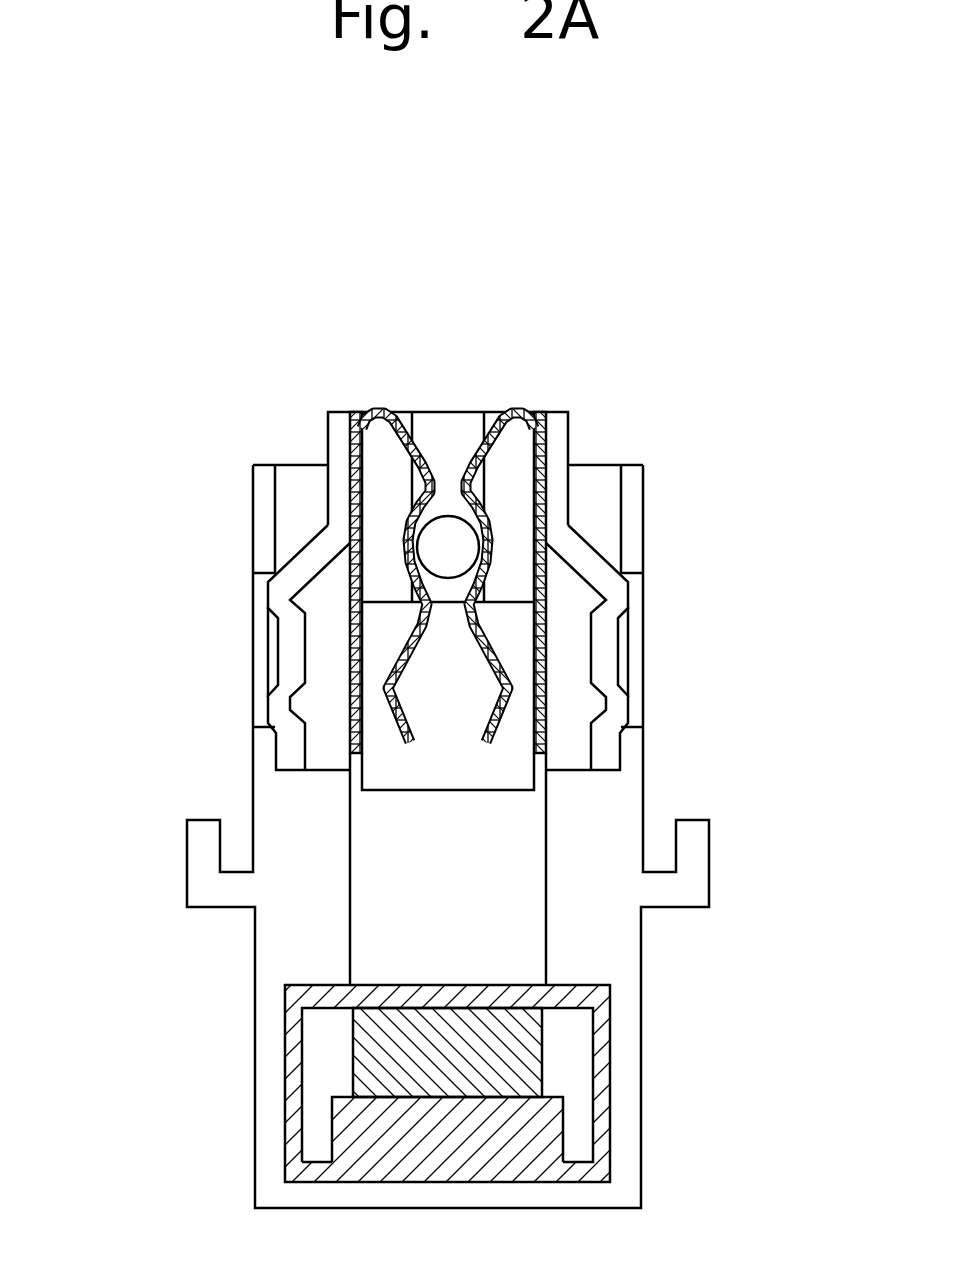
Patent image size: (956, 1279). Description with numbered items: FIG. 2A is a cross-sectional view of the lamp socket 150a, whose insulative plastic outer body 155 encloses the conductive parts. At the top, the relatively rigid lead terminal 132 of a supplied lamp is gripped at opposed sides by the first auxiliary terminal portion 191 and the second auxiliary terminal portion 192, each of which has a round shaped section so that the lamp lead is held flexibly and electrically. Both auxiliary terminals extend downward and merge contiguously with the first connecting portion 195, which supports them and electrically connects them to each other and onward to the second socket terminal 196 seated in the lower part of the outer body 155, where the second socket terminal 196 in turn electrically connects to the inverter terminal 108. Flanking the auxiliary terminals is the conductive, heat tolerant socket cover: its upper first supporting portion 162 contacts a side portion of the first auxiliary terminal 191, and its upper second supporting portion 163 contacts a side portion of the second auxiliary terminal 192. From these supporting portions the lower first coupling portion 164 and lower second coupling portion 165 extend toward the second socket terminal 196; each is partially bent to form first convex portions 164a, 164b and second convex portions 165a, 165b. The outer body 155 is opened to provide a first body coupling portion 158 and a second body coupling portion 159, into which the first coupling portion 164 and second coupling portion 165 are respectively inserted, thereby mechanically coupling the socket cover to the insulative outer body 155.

The socket assembly 150a is at (672, 305).
The outer body 155 is at (620, 801).
The first body coupling portion 158 is at (300, 480).
The second body coupling portion 159 is at (598, 478).
The first supporting portion 162 is at (340, 425).
The second supporting portion 163 is at (558, 425).
The lead terminal 132 is at (449, 528).
The first auxiliary terminal portion 191 is at (410, 540).
The second auxiliary terminal portion 192 is at (488, 543).
The first coupling portion 164 is at (194, 647).
The first convex portion 164a is at (282, 600).
The first convex portion 164b is at (282, 708).
The second coupling portion 165 is at (701, 647).
The second convex portion 165a is at (614, 600).
The second convex portion 165b is at (658, 710).
The first connecting portion 195 is at (517, 905).
The inverter terminal 108 is at (528, 1045).
The second socket terminal 196 is at (533, 1135).